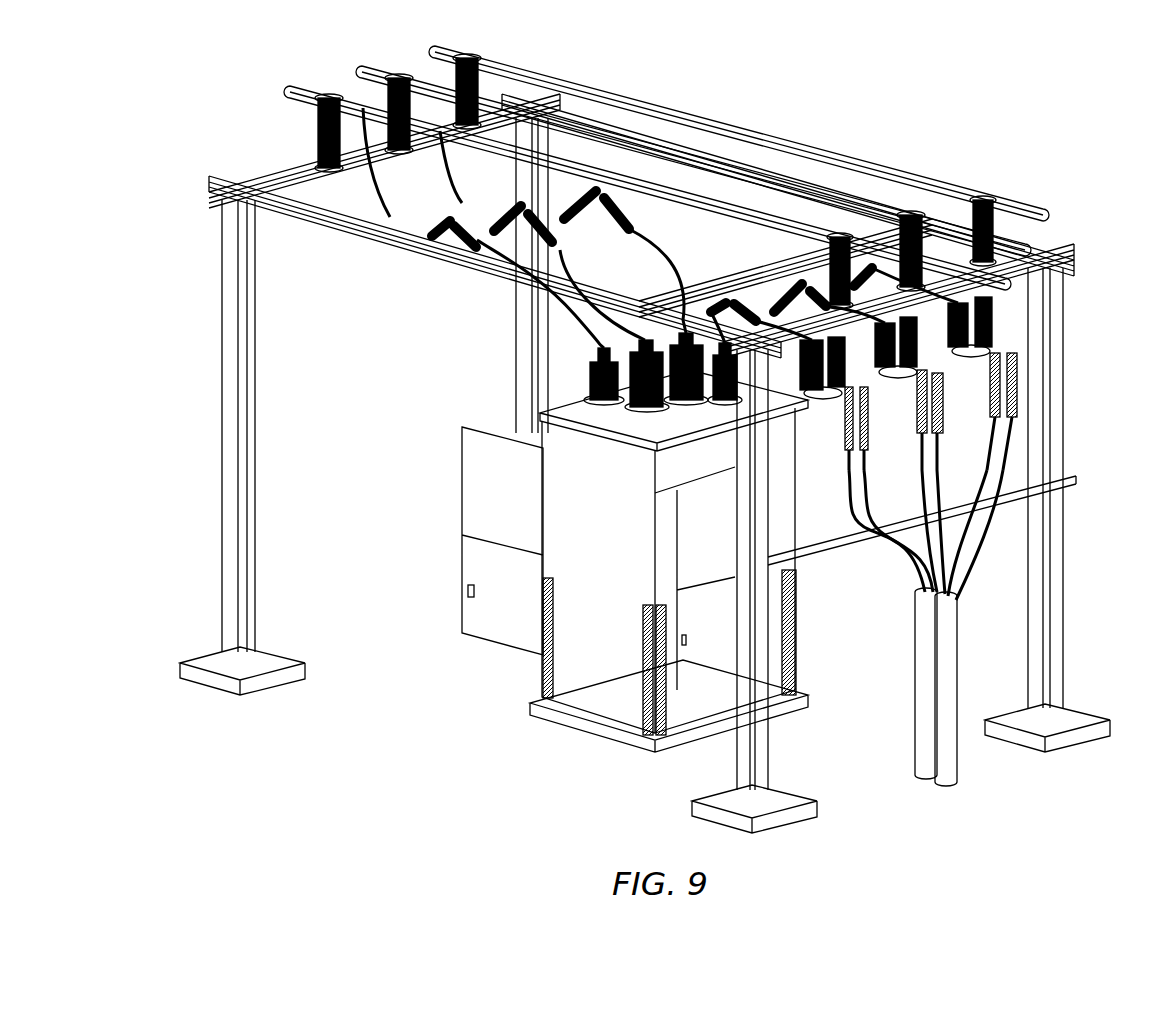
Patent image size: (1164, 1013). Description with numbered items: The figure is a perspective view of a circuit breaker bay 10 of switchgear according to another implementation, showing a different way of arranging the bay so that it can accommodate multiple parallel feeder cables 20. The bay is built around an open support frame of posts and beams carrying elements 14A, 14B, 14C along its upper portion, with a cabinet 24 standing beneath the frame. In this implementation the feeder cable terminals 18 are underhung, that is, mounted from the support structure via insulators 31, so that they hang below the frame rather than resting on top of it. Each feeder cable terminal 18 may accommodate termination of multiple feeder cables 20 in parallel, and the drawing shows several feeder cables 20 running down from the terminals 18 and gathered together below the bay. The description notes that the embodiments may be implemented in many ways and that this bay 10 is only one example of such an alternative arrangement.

The circuit breaker bay 10 is at (118, 144).
The bus bar phase A 14A is at (296, 90).
The bus bar phase B 14B is at (362, 68).
The bus bar phase C 14C is at (436, 50).
The feeder cable terminal 18 is at (1030, 350).
The feeder cable 20 is at (901, 566).
The cabinet 24 is at (425, 514).
The insulator 31 is at (1010, 311).